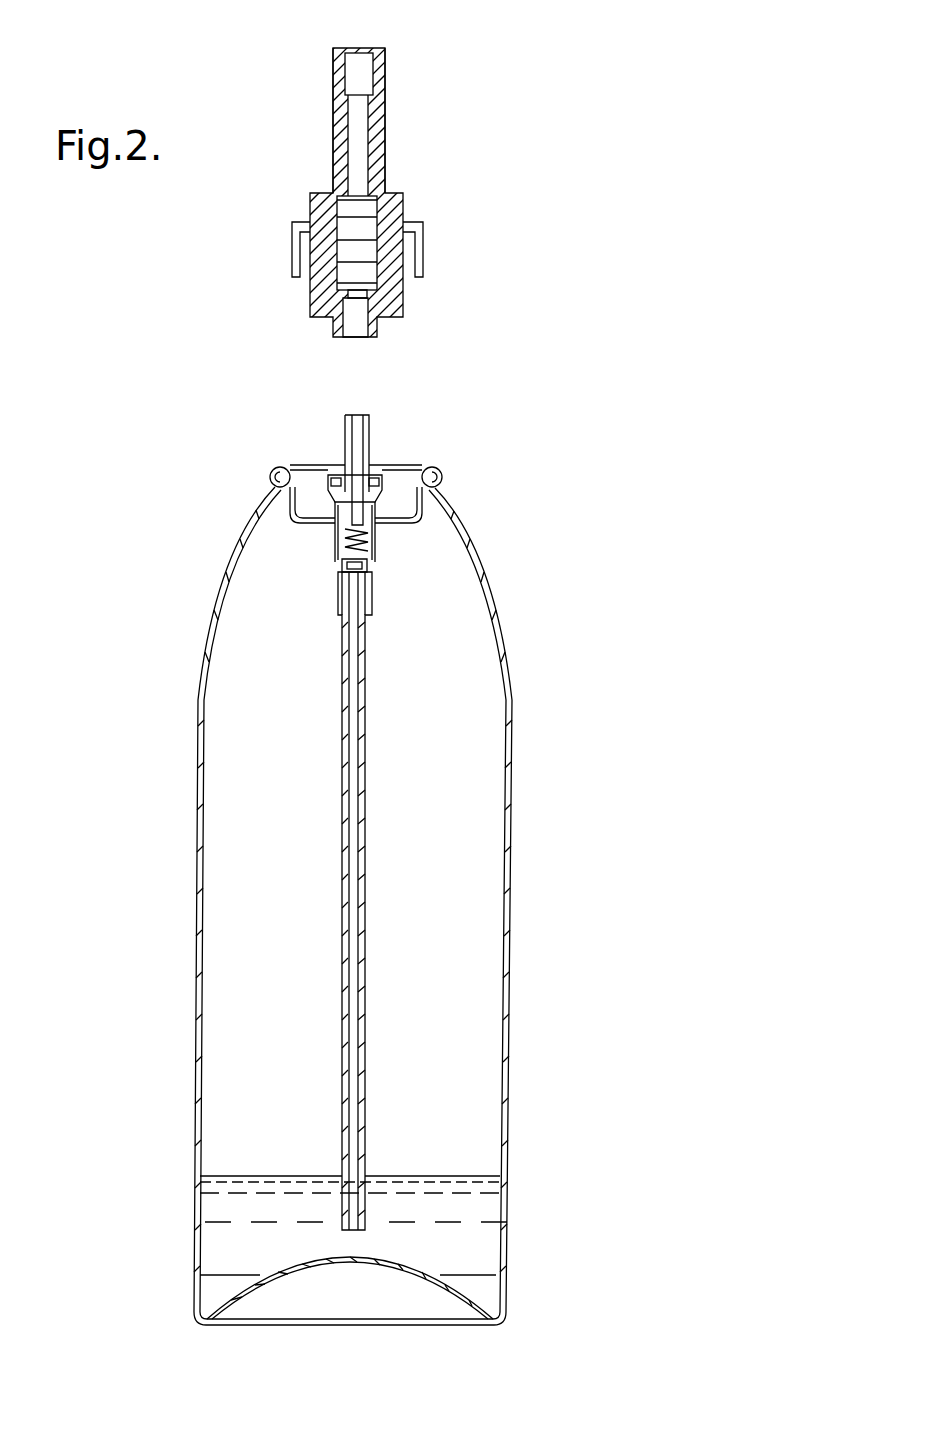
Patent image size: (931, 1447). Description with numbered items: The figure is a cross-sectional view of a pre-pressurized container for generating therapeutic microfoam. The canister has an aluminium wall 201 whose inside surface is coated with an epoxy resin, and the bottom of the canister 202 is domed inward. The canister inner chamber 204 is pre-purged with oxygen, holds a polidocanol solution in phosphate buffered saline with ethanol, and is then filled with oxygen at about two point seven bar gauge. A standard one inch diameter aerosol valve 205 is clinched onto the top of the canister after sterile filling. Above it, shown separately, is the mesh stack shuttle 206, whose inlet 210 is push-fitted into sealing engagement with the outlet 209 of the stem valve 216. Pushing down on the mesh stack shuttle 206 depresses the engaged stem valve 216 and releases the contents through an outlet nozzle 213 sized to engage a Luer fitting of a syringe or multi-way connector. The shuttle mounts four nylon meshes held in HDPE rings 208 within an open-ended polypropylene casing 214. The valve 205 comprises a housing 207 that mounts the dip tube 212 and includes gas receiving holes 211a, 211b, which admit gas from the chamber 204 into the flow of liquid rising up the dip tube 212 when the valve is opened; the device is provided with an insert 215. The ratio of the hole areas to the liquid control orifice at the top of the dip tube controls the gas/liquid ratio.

The aluminium wall 201 is at (511, 760).
The bottom of the canister 202 is at (470, 1302).
The canister inner chamber 204 is at (475, 862).
The aerosol valve 205 is at (331, 485).
The mesh stack shuttle 206 is at (395, 203).
The housing 207 is at (376, 529).
The HDPE rings 208 is at (357, 253).
The outlet 209 is at (361, 414).
The inlet 210 is at (355, 337).
The gas receiving hole 211a is at (375, 562).
The gas receiving hole 211b is at (343, 561).
The dip tube 212 is at (342, 842).
The outlet nozzle 213 is at (353, 53).
The polypropylene casing 214 is at (342, 143).
The insert 215 is at (348, 551).
The stem valve 216 is at (368, 434).